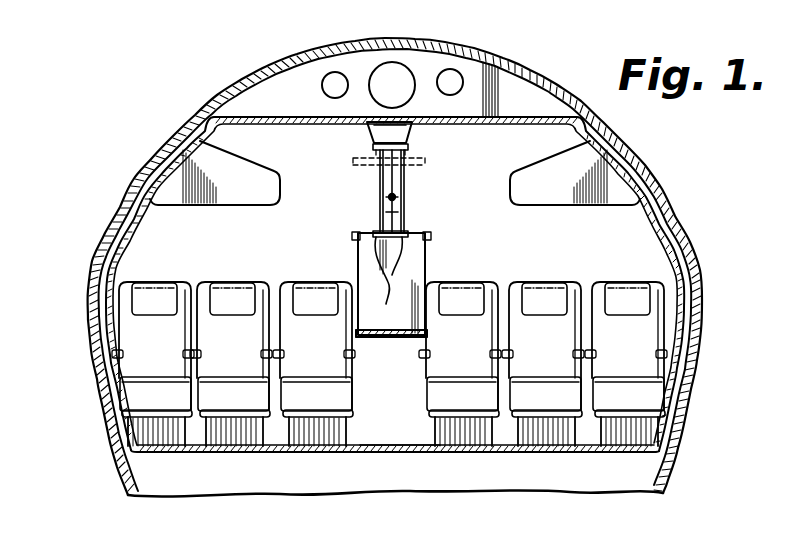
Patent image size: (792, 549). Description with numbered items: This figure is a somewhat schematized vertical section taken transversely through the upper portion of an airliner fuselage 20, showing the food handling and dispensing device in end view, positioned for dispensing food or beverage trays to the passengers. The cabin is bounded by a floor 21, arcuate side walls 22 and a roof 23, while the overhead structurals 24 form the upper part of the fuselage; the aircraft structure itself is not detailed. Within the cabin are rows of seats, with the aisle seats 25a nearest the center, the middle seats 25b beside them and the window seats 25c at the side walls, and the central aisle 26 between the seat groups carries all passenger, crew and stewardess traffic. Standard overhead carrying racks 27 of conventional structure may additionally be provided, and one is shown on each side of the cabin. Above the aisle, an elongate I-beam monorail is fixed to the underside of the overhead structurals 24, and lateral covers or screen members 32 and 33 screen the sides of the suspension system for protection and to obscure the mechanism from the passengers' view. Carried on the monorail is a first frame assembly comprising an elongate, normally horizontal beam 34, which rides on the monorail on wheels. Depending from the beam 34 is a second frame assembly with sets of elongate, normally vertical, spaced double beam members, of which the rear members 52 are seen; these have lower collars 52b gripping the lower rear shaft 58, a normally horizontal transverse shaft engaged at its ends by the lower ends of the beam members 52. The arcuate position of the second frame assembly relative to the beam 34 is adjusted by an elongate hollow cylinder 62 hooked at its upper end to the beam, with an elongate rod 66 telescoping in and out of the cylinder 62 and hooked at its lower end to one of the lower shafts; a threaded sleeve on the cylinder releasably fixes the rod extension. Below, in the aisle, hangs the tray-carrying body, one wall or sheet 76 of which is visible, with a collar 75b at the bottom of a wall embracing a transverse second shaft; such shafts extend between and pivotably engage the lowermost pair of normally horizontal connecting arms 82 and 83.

The aircraft fuselage 20 is at (681, 252).
The floor 21 is at (357, 453).
The arcuate side walls 22 is at (143, 216).
The roof 23 is at (502, 125).
The overhead structurals 24 is at (422, 50).
The aisle seats 25a is at (305, 281).
The middle seats 25b is at (551, 265).
The window seats 25c is at (150, 281).
The central aisle 26 is at (402, 445).
The overhead carrying racks 27 is at (244, 170).
The lateral cover or screen member 32 is at (413, 132).
The lateral cover or screen member 33 is at (366, 132).
The beam 34 is at (410, 149).
The rear double beam members 52 is at (384, 180).
The lower collars 52b is at (387, 273).
The lower rear shaft 58 is at (373, 231).
The hollow cylinder 62 is at (403, 179).
The rod 66 is at (399, 216).
The collar 75b is at (405, 338).
The wall or sheet 76 is at (426, 256).
The connecting arm 82 is at (429, 339).
The connecting arm 83 is at (355, 332).